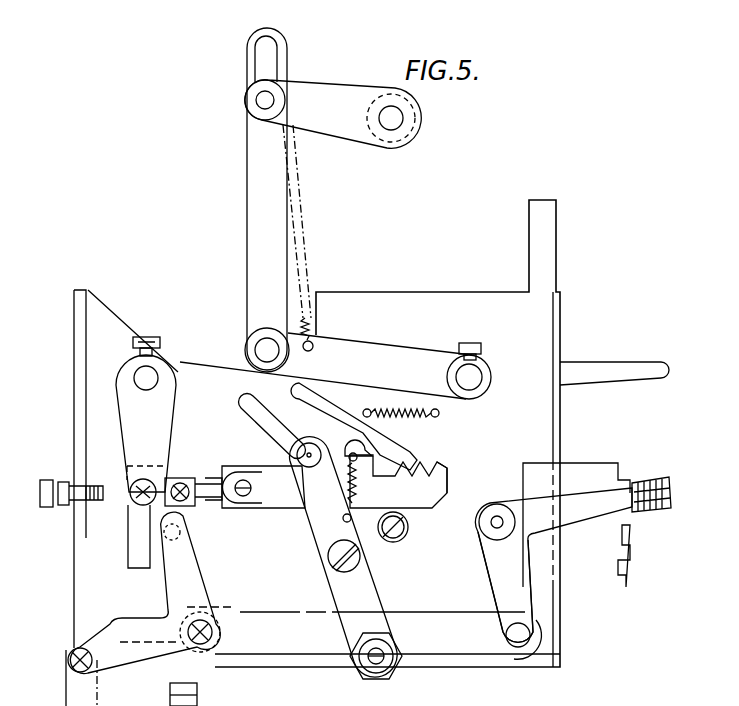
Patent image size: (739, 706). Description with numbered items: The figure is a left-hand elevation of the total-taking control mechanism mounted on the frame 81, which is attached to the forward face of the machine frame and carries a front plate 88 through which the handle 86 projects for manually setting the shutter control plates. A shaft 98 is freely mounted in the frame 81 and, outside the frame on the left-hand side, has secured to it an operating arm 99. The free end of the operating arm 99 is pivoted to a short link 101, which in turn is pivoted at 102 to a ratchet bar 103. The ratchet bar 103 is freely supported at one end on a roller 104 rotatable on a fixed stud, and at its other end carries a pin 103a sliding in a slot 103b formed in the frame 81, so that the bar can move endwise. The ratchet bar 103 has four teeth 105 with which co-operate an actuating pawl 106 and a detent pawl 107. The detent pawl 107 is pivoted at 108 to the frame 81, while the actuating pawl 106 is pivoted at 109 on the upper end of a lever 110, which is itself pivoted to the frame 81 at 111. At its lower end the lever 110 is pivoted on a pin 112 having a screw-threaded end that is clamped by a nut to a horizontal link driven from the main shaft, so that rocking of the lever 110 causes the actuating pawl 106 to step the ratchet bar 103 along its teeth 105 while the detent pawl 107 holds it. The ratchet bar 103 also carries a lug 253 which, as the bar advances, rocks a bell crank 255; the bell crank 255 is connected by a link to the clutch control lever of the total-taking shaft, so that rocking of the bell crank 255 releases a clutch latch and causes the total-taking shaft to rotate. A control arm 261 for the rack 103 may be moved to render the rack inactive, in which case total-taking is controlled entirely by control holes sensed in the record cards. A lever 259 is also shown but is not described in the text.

The frame 81 is at (547, 333).
The handle 86 is at (643, 368).
The front plate 88 is at (557, 408).
The shaft 98 is at (150, 380).
The operating arm 99 is at (162, 417).
The short link 101 is at (170, 470).
The pivot 102 is at (252, 488).
The ratchet bar 103 is at (420, 505).
The pin 103a is at (193, 499).
The slot 103b is at (205, 492).
The roller 104 is at (402, 543).
The teeth 105 is at (422, 476).
The actuating pawl 106 is at (382, 448).
The detent pawl 107 is at (412, 452).
The pivot 108 is at (320, 430).
The pivot 109 is at (292, 453).
The lever 110 is at (320, 535).
The pivot 111 is at (330, 563).
The pin 112 is at (397, 650).
The lug 253 is at (142, 557).
The bell crank 255 is at (197, 583).
The lever 259 is at (505, 565).
The control arm 261 is at (575, 503).